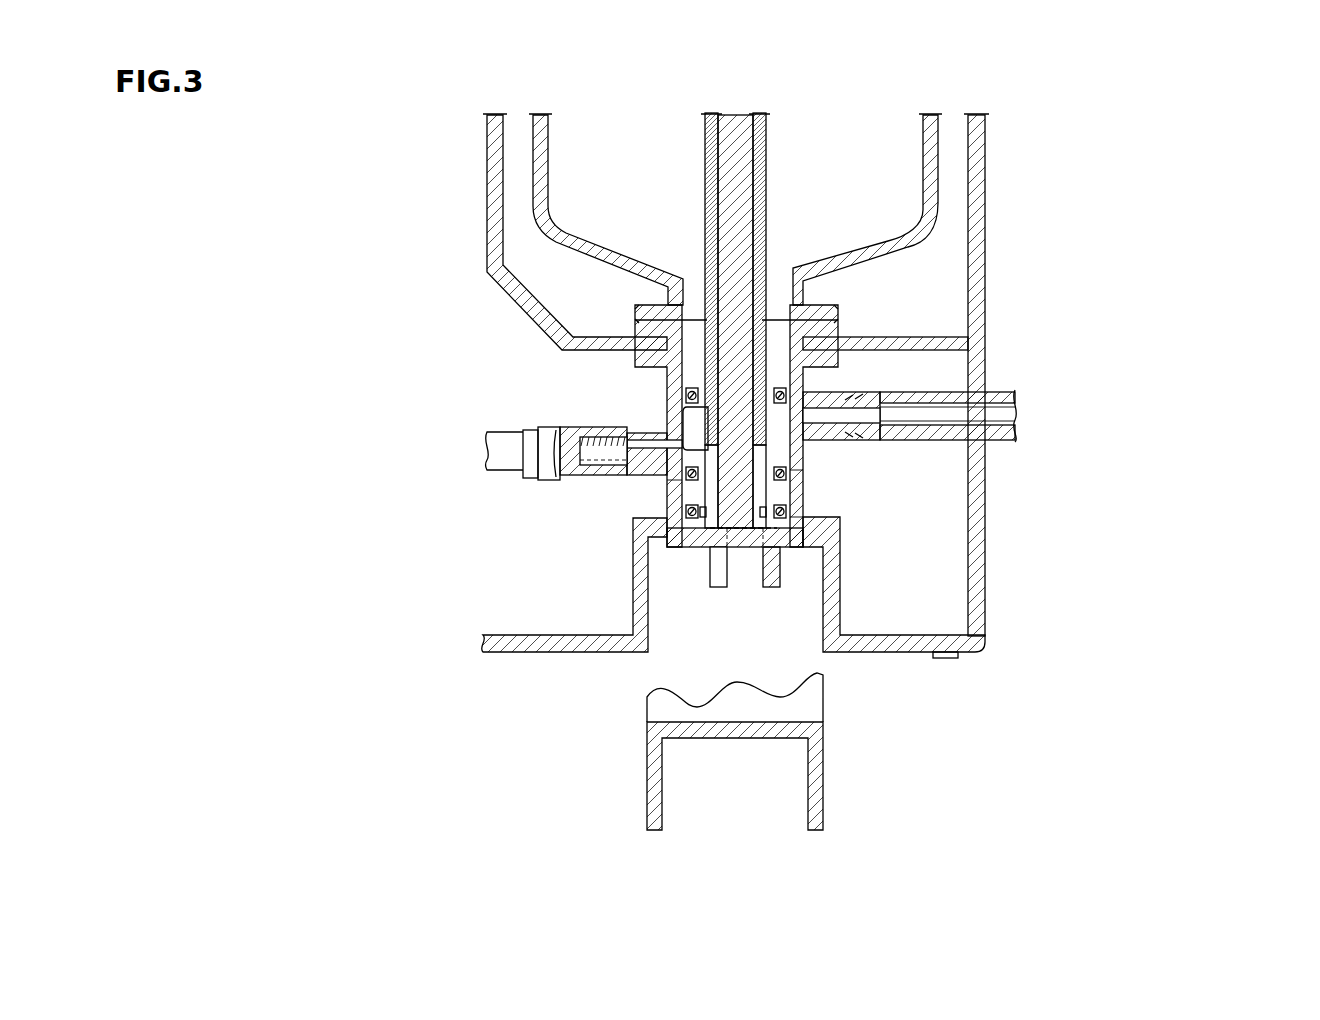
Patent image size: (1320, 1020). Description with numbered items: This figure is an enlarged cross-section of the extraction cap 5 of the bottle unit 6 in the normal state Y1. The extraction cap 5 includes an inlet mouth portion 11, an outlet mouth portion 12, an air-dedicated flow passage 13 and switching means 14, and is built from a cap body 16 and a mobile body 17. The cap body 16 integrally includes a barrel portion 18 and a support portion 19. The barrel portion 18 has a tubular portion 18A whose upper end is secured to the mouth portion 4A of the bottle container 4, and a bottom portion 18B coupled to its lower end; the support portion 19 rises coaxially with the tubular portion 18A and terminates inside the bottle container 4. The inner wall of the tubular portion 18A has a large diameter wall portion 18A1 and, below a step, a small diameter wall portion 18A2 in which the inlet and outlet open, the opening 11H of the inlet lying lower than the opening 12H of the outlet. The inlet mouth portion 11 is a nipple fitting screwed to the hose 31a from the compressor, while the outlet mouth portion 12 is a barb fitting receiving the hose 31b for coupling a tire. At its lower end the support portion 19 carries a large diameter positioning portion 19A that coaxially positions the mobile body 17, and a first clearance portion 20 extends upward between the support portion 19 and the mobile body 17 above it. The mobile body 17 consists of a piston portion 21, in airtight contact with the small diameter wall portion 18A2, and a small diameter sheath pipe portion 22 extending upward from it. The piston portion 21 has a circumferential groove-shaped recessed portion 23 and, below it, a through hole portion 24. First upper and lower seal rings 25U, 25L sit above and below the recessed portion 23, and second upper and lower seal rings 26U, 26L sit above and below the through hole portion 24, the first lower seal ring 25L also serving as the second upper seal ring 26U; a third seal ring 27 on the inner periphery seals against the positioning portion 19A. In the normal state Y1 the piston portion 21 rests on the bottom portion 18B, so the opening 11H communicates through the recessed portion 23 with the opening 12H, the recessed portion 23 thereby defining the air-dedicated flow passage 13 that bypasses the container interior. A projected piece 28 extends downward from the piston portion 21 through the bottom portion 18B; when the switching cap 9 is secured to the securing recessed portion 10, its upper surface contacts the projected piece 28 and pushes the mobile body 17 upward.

The bottle container 4 is at (680, 321).
The mouth portion 4A is at (727, 347).
The extraction cap 5 is at (784, 197).
The bottle unit 6 is at (938, 168).
The normal state Y1 is at (944, 242).
The switching cap 9 is at (647, 777).
The securing recessed portion 10 is at (681, 640).
The inlet mouth portion 11 is at (597, 467).
The opening 11H is at (684, 412).
The outlet mouth portion 12 is at (948, 426).
The opening 12H is at (803, 437).
The air-dedicated flow passage 13 is at (555, 484).
The switching means 14 is at (684, 751).
The cap body 16 is at (283, 275).
The mobile body 17 is at (1180, 240).
The barrel portion 18 is at (338, 357).
The tubular portion 18A is at (667, 404).
The large diameter wall portion 18A1 is at (803, 367).
The small diameter wall portion 18A2 is at (803, 460).
The bottom portion 18B is at (633, 585).
The support portion 19 is at (640, 266).
The positioning portion 19A is at (803, 487).
The first clearance portion 20 is at (714, 158).
The piston portion 21 is at (840, 520).
The sheath pipe portion 22 is at (766, 318).
The recessed portion 23 is at (640, 473).
The through hole portion 24 is at (665, 467).
The first upper seal ring 25U is at (687, 390).
The first lower seal ring 25L is at (687, 483).
The second upper seal ring 26U is at (610, 522).
The second lower seal ring 26L is at (697, 518).
The third seal ring 27 is at (757, 497).
The projected piece 28 is at (805, 542).
The hose 31a is at (509, 419).
The hose 31b is at (1008, 392).